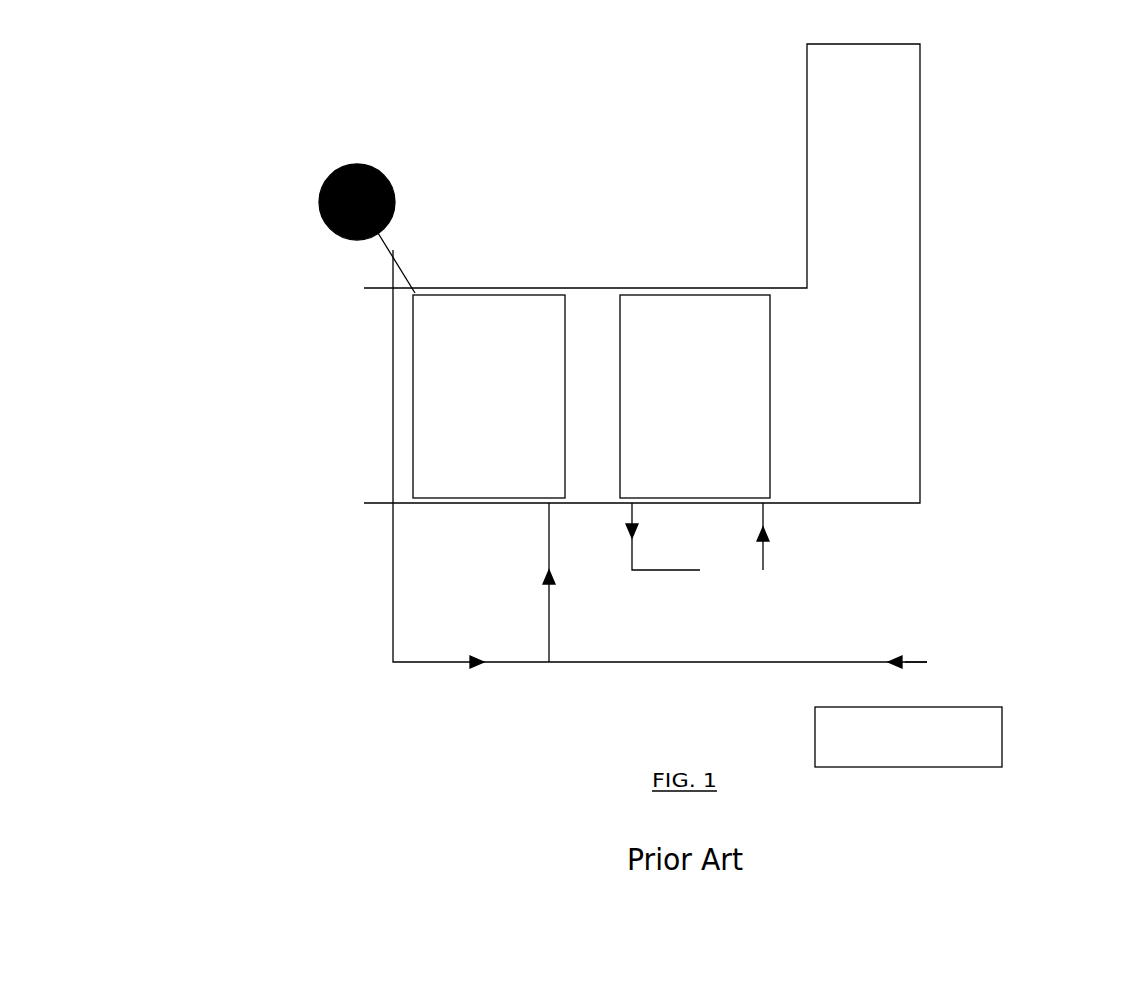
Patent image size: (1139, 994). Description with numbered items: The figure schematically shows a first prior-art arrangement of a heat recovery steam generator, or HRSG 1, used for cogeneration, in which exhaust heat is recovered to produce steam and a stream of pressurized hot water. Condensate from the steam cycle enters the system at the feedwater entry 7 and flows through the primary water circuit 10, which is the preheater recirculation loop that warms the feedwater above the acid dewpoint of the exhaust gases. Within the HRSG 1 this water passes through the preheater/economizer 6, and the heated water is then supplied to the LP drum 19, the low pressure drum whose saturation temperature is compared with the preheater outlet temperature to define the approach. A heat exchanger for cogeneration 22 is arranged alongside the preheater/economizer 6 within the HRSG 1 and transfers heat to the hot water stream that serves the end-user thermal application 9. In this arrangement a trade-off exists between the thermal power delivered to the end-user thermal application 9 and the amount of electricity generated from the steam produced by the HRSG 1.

The HRSG 1 is at (806, 100).
The LP drum 19 is at (372, 163).
The primary water circuit 10 is at (390, 400).
The preheater/economizer 6 is at (497, 401).
The heat exchanger for cogeneration 22 is at (712, 401).
The end-user thermal application 9 is at (897, 703).
The feedwater entry 7 is at (913, 656).